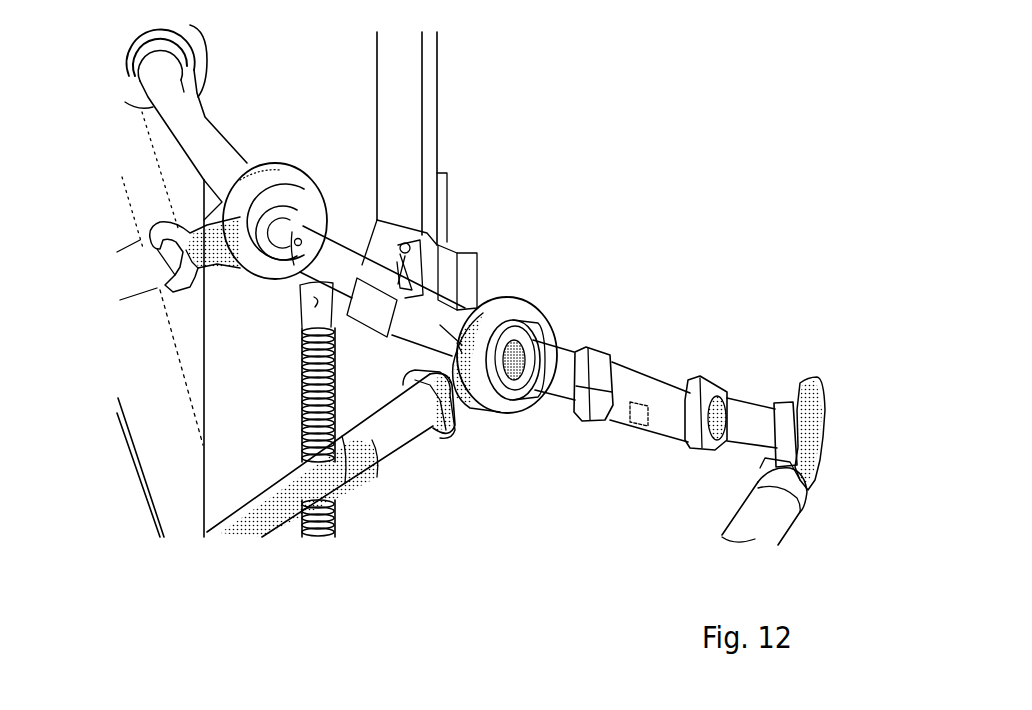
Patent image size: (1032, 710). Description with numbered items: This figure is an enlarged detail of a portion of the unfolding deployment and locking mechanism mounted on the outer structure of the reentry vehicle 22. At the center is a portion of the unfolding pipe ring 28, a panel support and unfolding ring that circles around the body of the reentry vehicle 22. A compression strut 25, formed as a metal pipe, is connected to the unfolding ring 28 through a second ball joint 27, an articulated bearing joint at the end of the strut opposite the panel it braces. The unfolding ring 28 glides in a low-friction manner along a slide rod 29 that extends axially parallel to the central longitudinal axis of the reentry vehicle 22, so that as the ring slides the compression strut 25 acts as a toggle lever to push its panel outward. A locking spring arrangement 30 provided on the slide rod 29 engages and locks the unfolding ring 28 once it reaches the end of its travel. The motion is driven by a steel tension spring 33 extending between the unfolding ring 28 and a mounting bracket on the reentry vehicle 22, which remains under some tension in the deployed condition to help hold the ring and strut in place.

The reentry vehicle 22 is at (693, 199).
The compression strut 25 is at (352, 485).
The second ball joint 27 is at (537, 303).
The unfolding pipe ring 28 is at (630, 380).
The slide rod 29 is at (415, 102).
The locking spring arrangement 30 is at (395, 263).
The tension spring 33 is at (300, 375).